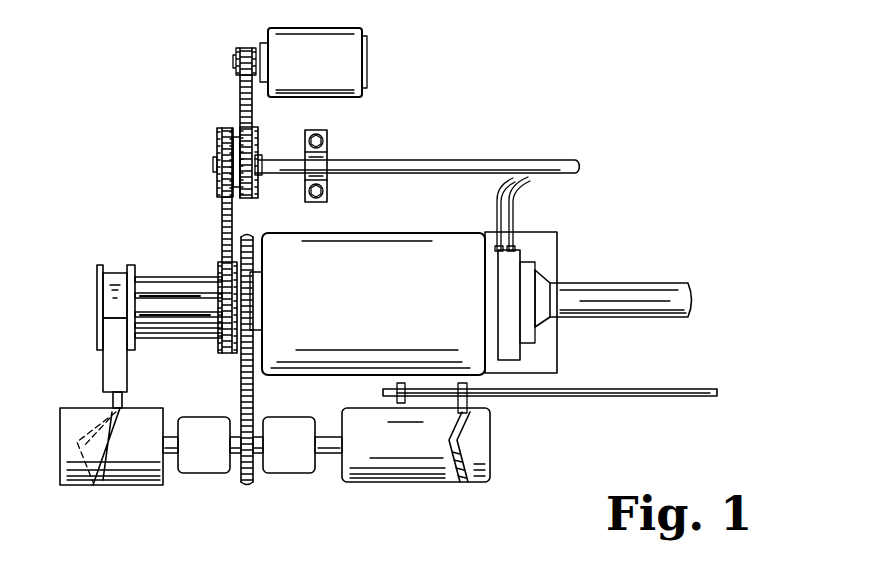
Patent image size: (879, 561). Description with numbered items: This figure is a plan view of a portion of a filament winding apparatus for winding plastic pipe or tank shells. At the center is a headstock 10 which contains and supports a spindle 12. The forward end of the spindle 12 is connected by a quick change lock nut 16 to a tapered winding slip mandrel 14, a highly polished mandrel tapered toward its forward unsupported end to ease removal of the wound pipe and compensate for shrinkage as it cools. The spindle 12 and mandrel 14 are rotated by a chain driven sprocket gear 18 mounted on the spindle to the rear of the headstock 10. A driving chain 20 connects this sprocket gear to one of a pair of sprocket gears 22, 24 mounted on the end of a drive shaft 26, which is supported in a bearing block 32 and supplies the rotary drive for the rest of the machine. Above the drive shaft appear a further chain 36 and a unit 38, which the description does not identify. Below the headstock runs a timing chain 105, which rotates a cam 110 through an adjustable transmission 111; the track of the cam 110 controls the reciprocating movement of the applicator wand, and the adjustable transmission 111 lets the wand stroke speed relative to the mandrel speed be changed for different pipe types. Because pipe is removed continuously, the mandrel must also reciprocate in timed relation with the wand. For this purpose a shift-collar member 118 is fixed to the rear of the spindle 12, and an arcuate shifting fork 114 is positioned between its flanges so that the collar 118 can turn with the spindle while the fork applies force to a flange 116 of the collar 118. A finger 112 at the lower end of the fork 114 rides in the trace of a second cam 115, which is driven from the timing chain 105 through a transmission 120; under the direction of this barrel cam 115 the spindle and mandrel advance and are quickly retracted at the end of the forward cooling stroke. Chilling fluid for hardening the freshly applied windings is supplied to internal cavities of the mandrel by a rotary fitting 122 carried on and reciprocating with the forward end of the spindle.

The headstock 10 is at (397, 330).
The spindle 12 is at (155, 280).
The tapered winding slip mandrel 14 is at (655, 296).
The quick change lock nut 16 is at (548, 278).
The chain driven sprocket gear 18 is at (217, 271).
The driving chain 20 is at (222, 215).
The sprocket gear 22 is at (218, 136).
The sprocket gear 24 is at (254, 148).
The drive shaft 26 is at (413, 152).
The bearing block 32 is at (328, 137).
The drive chain 36 is at (243, 104).
The motor 38 is at (355, 70).
The driving chain 105 is at (244, 395).
The cam 110 is at (405, 467).
The adjustable transmission 111 is at (292, 463).
The finger 112 is at (122, 402).
The arcuate shifting fork 114 is at (112, 374).
The second cam 115 is at (135, 458).
The flange 116 is at (97, 266).
The shift-collar member 118 is at (109, 273).
The transmission 120 is at (213, 468).
The rotary fitting 122 is at (509, 276).